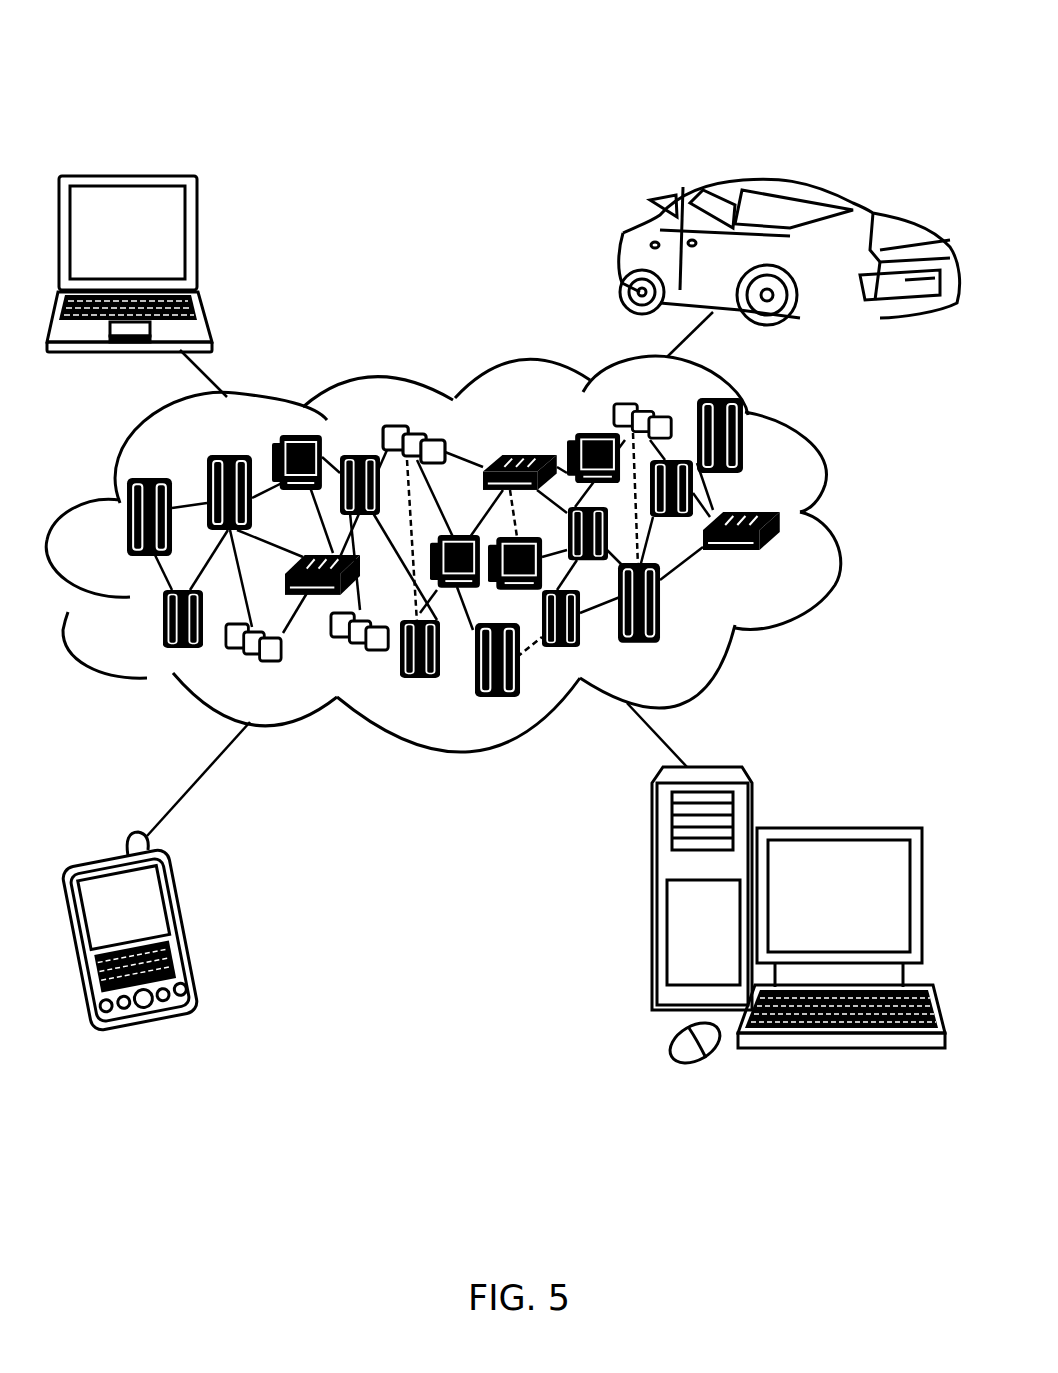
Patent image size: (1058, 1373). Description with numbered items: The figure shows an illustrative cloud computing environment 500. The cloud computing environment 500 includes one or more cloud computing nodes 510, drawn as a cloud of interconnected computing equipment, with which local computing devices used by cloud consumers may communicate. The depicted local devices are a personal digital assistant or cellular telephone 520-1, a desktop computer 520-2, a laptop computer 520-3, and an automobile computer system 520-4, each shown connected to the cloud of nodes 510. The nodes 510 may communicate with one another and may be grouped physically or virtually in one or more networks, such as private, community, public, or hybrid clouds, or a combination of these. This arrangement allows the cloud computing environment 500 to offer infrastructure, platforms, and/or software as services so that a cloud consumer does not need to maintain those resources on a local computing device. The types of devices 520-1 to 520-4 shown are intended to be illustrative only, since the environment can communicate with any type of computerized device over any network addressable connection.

The cloud computing environment 500 is at (783, 28).
The cloud computing nodes 510 is at (777, 556).
The personal digital assistant (PDA) or cellular telephone 520-1 is at (190, 925).
The desktop computer 520-2 is at (836, 829).
The laptop computer 520-3 is at (198, 240).
The automobile computer system 520-4 is at (614, 253).